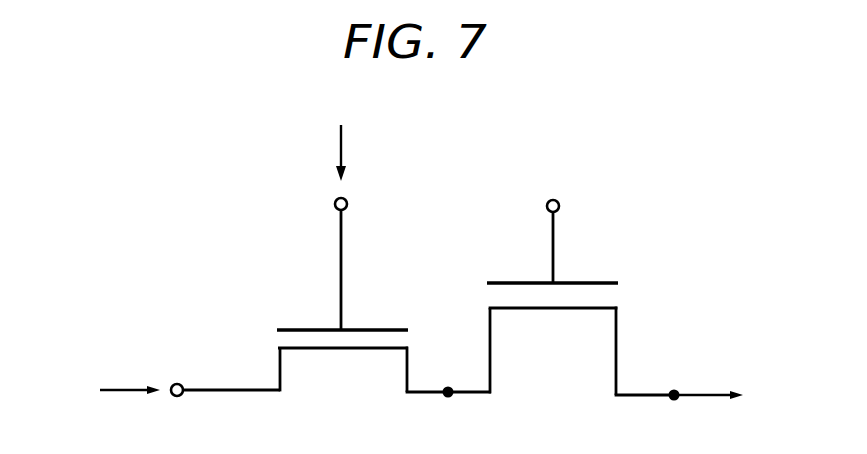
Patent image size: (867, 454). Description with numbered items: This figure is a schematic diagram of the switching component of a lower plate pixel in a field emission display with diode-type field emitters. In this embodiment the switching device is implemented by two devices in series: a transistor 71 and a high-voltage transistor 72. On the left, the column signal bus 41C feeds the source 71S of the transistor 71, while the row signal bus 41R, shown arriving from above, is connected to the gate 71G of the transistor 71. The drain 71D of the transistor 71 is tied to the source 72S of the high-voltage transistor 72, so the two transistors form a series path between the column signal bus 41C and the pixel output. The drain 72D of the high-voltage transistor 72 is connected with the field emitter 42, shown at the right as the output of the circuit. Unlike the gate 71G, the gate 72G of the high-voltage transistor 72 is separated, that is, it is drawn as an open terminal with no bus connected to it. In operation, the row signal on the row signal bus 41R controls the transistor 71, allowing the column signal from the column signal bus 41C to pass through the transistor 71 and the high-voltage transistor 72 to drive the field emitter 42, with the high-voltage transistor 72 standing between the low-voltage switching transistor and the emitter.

The column signal bus 41C is at (105, 392).
The row signal bus 41R is at (340, 138).
The transistor 71 is at (342, 362).
The source 71S is at (221, 372).
The gate 71G is at (369, 259).
The drain 71D is at (428, 391).
The high-voltage transistor 72 is at (552, 337).
The source 72S is at (476, 372).
The gate 72G is at (579, 238).
The drain 72D is at (657, 354).
The field emitter 42 is at (726, 395).